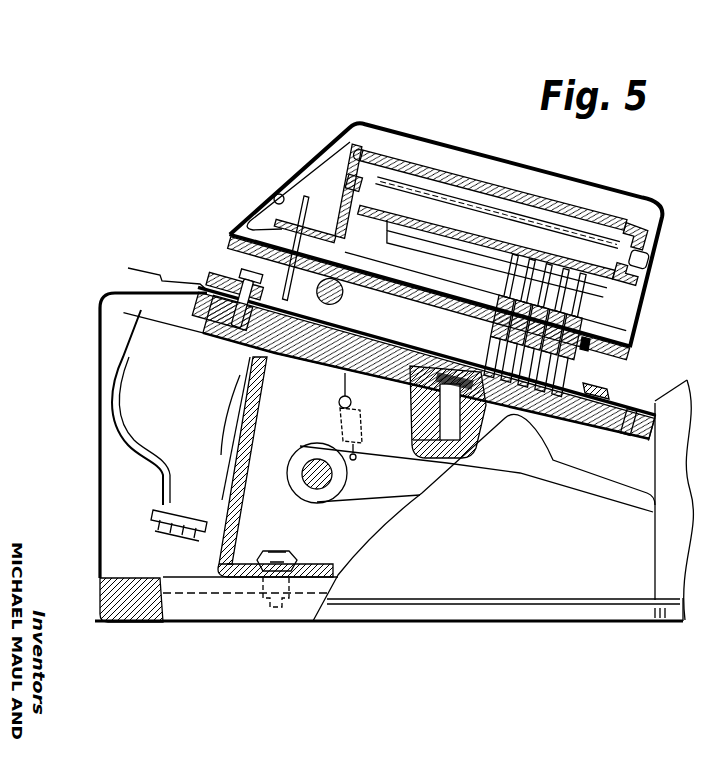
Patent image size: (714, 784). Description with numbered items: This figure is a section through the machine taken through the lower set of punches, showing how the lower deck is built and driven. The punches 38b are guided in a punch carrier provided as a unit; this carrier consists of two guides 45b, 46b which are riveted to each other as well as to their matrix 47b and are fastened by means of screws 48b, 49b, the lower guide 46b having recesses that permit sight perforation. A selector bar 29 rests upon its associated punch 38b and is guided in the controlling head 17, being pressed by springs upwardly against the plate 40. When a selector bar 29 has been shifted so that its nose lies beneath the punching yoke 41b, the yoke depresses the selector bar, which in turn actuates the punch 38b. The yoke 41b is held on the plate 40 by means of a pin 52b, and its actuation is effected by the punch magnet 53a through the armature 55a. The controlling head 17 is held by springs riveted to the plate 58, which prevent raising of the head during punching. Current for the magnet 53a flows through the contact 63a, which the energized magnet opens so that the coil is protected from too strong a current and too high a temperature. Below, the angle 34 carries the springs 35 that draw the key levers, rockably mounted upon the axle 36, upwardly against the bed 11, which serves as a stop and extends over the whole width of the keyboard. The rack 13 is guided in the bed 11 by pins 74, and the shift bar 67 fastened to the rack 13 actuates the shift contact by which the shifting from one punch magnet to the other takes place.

The bed 11 is at (422, 465).
The rack 13 is at (463, 455).
The controlling head 17 is at (636, 206).
The selector bar 29 is at (393, 243).
The angle 34 is at (217, 548).
The spring 35 is at (340, 420).
The axle 36 is at (318, 474).
The punch 38b is at (584, 313).
The plate 40 is at (482, 242).
The punching yoke 41b is at (385, 146).
The upper guide 45b is at (588, 347).
The lower guide 46b is at (201, 297).
The matrix 47b is at (207, 291).
The screw 48b is at (647, 402).
The screw 49b is at (238, 268).
The pin 52b is at (431, 197).
The punch magnet 53a is at (110, 434).
The armature 55a is at (140, 305).
The plate 58 is at (238, 224).
The contact 63a is at (152, 517).
The shift bar 67 is at (428, 438).
The pin 74 is at (470, 387).